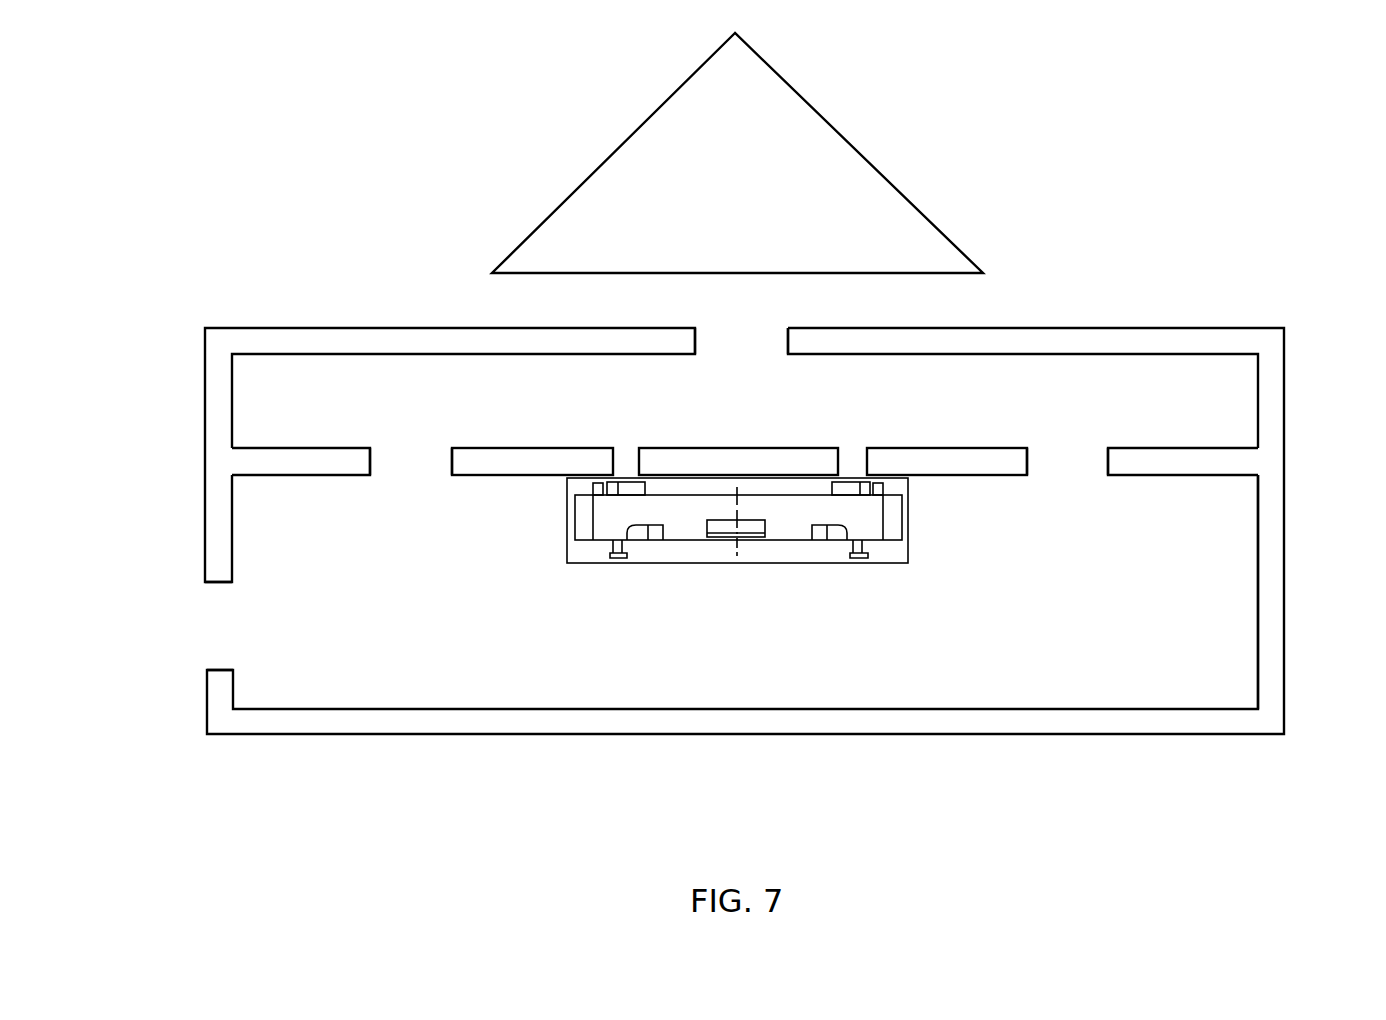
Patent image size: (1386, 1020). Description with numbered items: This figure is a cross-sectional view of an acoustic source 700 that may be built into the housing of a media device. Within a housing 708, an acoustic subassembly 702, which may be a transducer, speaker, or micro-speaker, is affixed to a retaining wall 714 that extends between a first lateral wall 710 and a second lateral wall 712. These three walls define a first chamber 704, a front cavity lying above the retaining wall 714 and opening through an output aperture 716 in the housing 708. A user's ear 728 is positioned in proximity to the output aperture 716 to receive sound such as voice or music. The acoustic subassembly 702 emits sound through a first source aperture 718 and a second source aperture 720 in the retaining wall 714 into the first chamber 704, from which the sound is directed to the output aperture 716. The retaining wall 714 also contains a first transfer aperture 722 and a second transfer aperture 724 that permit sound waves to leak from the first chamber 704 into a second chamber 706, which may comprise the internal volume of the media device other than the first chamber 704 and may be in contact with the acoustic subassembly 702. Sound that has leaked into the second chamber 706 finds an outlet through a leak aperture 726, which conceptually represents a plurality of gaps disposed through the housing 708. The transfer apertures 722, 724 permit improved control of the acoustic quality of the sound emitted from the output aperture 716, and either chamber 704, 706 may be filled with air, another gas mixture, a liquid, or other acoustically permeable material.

The acoustic source 700 is at (268, 218).
The acoustic subassembly 702 is at (907, 550).
The first chamber 704 is at (1245, 434).
The second chamber 706 is at (1245, 517).
The housing 708 is at (213, 378).
The first lateral wall 710 is at (213, 432).
The second lateral wall 712 is at (1275, 402).
The retaining wall 714 is at (768, 450).
The output aperture 716 is at (787, 318).
The first source aperture 718 is at (620, 443).
The second source aperture 720 is at (857, 445).
The first transfer aperture 722 is at (404, 443).
The second transfer aperture 724 is at (1068, 443).
The leak aperture 726 is at (213, 647).
The user's ear 728 is at (888, 244).